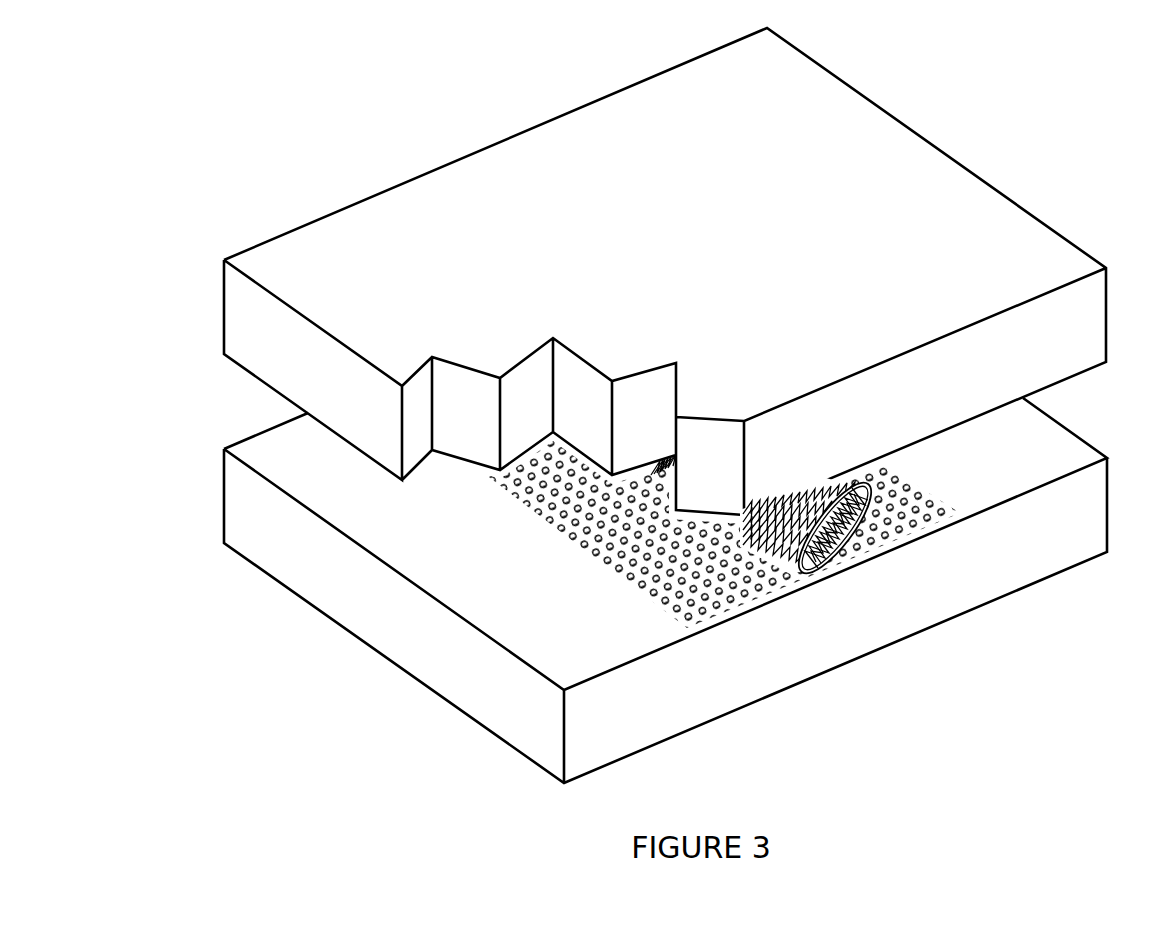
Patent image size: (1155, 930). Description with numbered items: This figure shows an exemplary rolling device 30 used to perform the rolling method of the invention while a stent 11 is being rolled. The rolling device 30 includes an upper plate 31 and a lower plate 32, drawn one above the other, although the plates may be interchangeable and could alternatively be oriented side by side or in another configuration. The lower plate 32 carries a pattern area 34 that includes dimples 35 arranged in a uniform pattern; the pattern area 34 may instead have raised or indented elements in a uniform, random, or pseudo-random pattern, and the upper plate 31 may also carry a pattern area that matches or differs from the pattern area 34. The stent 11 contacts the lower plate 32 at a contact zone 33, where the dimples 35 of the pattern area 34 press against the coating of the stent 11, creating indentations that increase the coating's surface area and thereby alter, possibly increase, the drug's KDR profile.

The rolling device 30 is at (648, 416).
The upper plate 31 is at (928, 330).
The lower plate 32 is at (408, 627).
The contact zone 33 is at (822, 570).
The pattern area 34 is at (682, 582).
The dimples 35 is at (590, 545).
The stent 11 is at (743, 622).